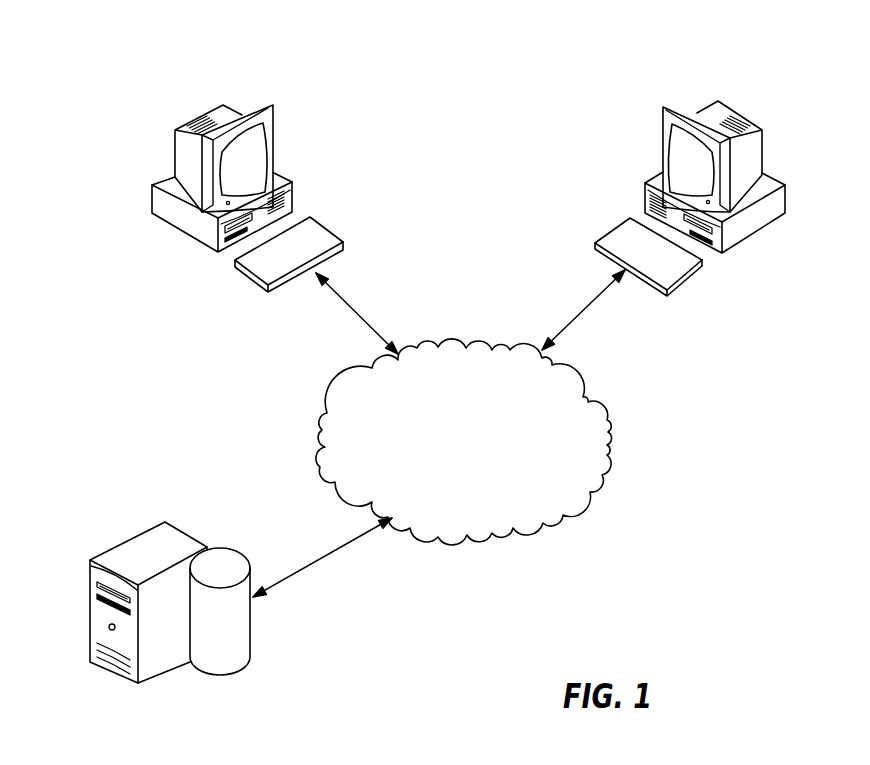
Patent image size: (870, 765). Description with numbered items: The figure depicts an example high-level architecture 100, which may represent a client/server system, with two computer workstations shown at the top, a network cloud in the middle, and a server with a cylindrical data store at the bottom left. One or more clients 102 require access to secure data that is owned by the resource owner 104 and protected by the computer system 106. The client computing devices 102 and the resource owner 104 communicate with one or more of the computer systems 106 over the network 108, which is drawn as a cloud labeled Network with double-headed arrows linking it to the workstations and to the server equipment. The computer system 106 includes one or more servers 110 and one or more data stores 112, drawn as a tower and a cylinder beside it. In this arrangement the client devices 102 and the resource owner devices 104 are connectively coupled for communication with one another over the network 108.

The architecture 100 is at (70, 83).
The client 102 is at (762, 153).
The resource owner 104 is at (175, 150).
The computer system 106 is at (113, 501).
The network 108 is at (607, 447).
The server 110 is at (165, 522).
The data store 112 is at (243, 668).